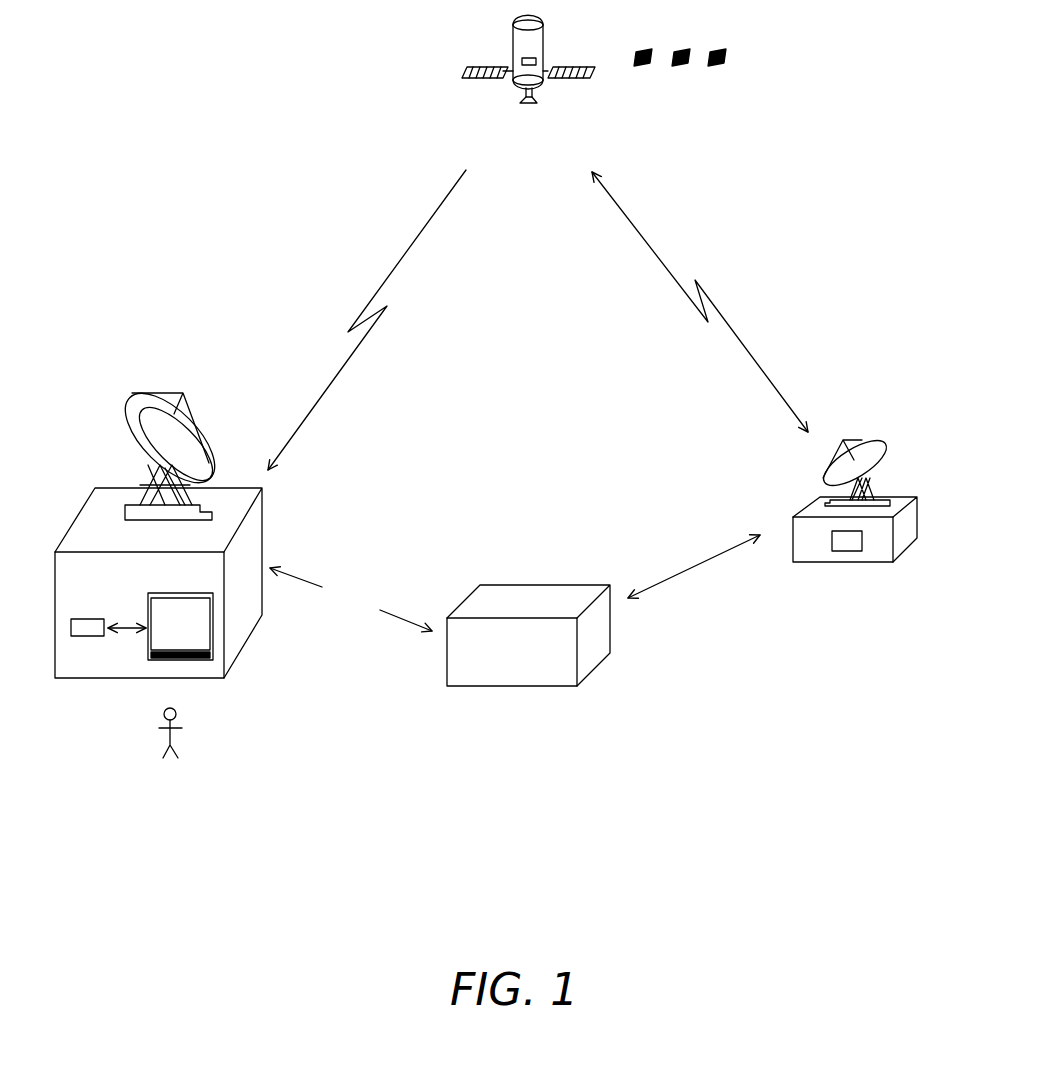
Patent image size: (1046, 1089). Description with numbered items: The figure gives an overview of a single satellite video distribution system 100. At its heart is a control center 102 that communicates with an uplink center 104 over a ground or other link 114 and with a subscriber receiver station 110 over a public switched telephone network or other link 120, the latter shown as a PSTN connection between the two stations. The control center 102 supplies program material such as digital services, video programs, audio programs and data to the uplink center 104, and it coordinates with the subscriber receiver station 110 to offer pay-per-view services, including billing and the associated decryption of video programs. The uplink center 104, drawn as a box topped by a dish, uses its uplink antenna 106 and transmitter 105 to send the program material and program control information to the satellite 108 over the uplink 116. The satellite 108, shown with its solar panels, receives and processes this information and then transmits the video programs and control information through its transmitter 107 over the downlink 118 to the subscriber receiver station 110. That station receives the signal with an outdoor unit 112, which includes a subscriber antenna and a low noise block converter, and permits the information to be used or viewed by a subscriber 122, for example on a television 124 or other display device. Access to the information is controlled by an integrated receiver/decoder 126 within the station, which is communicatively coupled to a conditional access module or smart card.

The video distribution system 100 is at (774, 152).
The control center 102 is at (590, 670).
The uplink center 104 is at (840, 562).
The transmitter 105 is at (860, 551).
The uplink antenna 106 is at (886, 450).
The transmitter 107 is at (530, 58).
The satellite 108 is at (568, 78).
The subscriber receiver station 110 is at (262, 538).
The outdoor unit 112 is at (127, 398).
The ground or other link 114 is at (690, 566).
The uplink 116 is at (740, 338).
The downlink 118 is at (407, 248).
The public switched telephone network or other link 120 is at (378, 578).
The subscriber 122 is at (189, 746).
The television 124 is at (213, 628).
The integrated receiver/decoder 126 is at (88, 636).